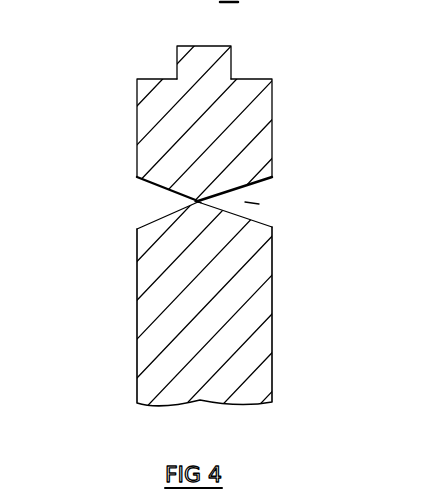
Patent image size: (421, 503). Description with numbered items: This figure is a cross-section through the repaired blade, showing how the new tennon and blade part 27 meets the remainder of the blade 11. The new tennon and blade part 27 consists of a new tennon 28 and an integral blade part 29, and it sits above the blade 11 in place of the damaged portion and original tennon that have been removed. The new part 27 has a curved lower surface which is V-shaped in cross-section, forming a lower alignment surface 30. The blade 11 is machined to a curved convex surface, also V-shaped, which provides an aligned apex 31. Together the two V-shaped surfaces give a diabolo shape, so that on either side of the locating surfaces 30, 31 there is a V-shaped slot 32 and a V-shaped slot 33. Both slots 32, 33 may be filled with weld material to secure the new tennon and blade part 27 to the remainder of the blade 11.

The blade 11 is at (144, 272).
The new tennon and blade part 27 is at (210, 210).
The new tennon 28 is at (227, 65).
The integral blade part 29 is at (263, 122).
The lower alignment surface 30 is at (197, 202).
The aligned apex 31 is at (197, 203).
The V-shaped slot 32 is at (256, 202).
The V-shaped slot 33 is at (197, 202).